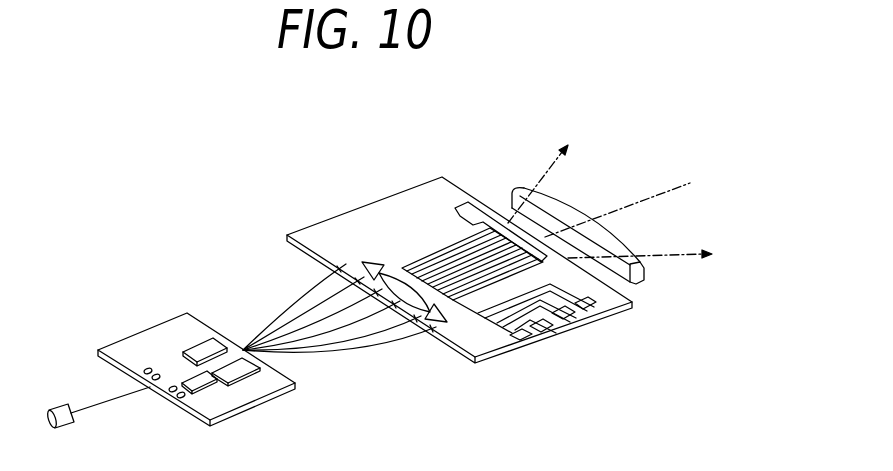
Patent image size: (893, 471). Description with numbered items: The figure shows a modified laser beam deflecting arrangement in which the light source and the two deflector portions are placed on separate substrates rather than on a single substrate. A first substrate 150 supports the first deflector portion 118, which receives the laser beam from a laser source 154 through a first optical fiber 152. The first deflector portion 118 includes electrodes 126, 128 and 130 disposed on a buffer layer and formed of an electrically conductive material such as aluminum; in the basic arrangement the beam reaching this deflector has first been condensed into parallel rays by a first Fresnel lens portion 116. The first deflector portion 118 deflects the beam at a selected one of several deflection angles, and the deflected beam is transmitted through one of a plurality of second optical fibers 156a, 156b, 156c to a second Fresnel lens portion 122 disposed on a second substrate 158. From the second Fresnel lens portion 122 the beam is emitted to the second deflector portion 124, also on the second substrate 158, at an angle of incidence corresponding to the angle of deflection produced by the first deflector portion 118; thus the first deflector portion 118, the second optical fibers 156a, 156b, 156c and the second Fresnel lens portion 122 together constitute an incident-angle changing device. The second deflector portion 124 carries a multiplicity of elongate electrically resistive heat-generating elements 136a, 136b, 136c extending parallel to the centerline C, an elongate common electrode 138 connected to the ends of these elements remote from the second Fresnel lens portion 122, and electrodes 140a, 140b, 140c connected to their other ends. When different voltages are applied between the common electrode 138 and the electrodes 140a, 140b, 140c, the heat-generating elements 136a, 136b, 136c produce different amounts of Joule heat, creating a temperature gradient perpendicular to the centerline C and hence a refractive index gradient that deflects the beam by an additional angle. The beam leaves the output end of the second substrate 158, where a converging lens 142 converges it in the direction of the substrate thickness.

The first Fresnel lens portion 116 is at (130, 354).
The first deflector portion 118 is at (180, 362).
The second Fresnel lens portion 122 is at (455, 331).
The second deflector portion 124 is at (456, 248).
The electrode 126 is at (200, 352).
The electrode 128 is at (262, 364).
The electrode 130 is at (200, 390).
The electrically resistive heat-generating element 136a is at (445, 233).
The electrically resistive heat-generating element 136b is at (445, 264).
The electrically resistive heat-generating element 136c is at (455, 242).
The common electrode 138 is at (463, 207).
The electrode 140a is at (520, 340).
The electrode 140b is at (541, 333).
The electrode 140c is at (556, 322).
The converging lens 142 is at (523, 190).
The first substrate 150 is at (176, 352).
The first optical fiber 152 is at (112, 390).
The laser source 154 is at (67, 423).
The second optical fiber 156a is at (320, 283).
The second optical fiber 156b is at (320, 300).
The second optical fiber 156c is at (310, 306).
The second substrate 158 is at (456, 279).
The centerline C is at (641, 197).